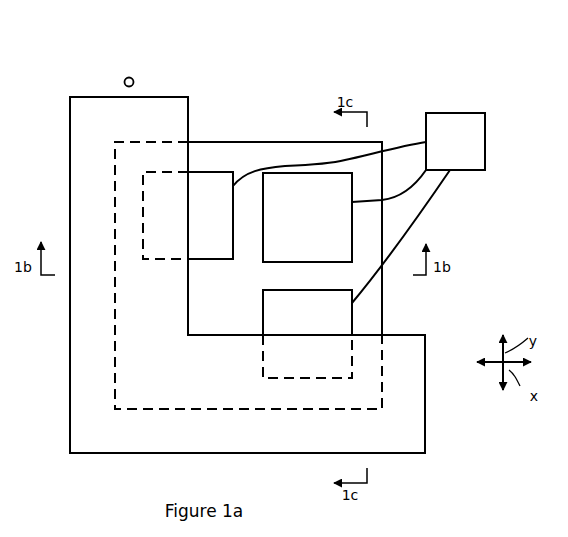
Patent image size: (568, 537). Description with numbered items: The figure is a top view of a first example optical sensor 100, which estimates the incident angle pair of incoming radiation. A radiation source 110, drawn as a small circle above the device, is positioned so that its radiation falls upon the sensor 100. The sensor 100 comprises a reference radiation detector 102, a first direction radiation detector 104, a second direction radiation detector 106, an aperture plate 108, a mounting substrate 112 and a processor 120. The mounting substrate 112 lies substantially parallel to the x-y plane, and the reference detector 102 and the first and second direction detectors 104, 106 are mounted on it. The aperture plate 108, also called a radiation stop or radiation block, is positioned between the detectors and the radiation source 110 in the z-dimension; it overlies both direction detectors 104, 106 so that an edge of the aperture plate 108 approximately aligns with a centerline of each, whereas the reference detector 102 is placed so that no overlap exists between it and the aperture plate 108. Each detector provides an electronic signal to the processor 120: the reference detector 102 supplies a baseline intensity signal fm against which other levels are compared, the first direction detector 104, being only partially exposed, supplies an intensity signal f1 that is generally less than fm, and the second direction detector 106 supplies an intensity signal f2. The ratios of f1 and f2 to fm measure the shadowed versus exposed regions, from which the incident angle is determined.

The optical sensor 100 is at (333, 86).
The reference radiation detector 102 is at (307, 217).
The first direction radiation detector 104 is at (188, 215).
The second direction radiation detector 106 is at (307, 334).
The aperture plate 108 is at (160, 108).
The radiation source 110 is at (127, 78).
The mounting substrate 112 is at (223, 155).
The processor 120 is at (455, 141).
The radiation intensity signal f1 is at (413, 135).
The radiation intensity signal f2 is at (436, 210).
The baseline intensity signal fm is at (407, 189).